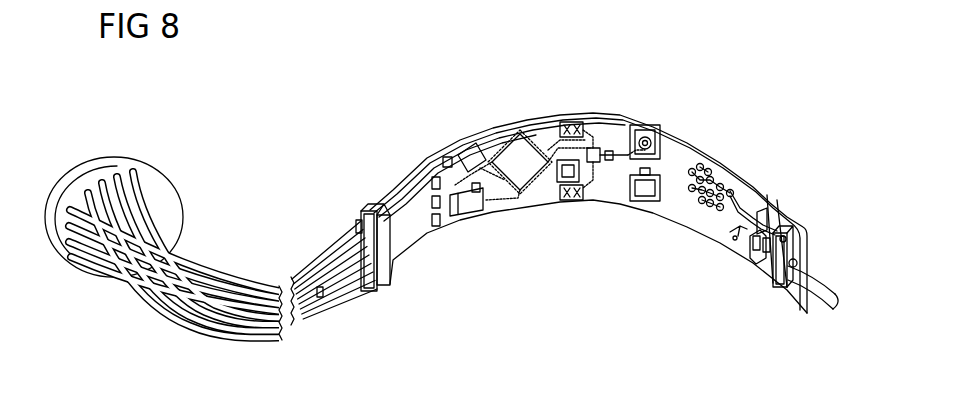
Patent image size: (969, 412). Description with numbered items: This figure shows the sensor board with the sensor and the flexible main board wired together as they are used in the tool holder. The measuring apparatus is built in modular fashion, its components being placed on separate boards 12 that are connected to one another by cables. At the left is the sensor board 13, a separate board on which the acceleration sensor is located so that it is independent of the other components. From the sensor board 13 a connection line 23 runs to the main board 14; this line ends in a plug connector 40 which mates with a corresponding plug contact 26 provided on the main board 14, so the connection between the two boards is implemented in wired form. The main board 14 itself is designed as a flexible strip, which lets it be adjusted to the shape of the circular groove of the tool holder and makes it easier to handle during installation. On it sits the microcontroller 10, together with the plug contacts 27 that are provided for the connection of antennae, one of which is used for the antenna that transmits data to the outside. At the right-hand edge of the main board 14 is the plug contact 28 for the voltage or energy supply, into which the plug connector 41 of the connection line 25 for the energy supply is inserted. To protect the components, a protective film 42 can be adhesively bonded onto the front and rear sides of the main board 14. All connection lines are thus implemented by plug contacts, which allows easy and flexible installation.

The microcontroller 10 is at (521, 150).
The circuit board 12 is at (426, 210).
The sensor board 13 is at (77, 273).
The main board 14 is at (732, 157).
The connection line 23 is at (297, 283).
The connection line 25 is at (830, 290).
The plug contact 26 is at (368, 200).
The plug contact 27 is at (643, 137).
The plug contact 28 is at (780, 212).
The plug connector 40 is at (365, 200).
The plug connector 41 is at (803, 209).
The protective film 42 is at (753, 253).